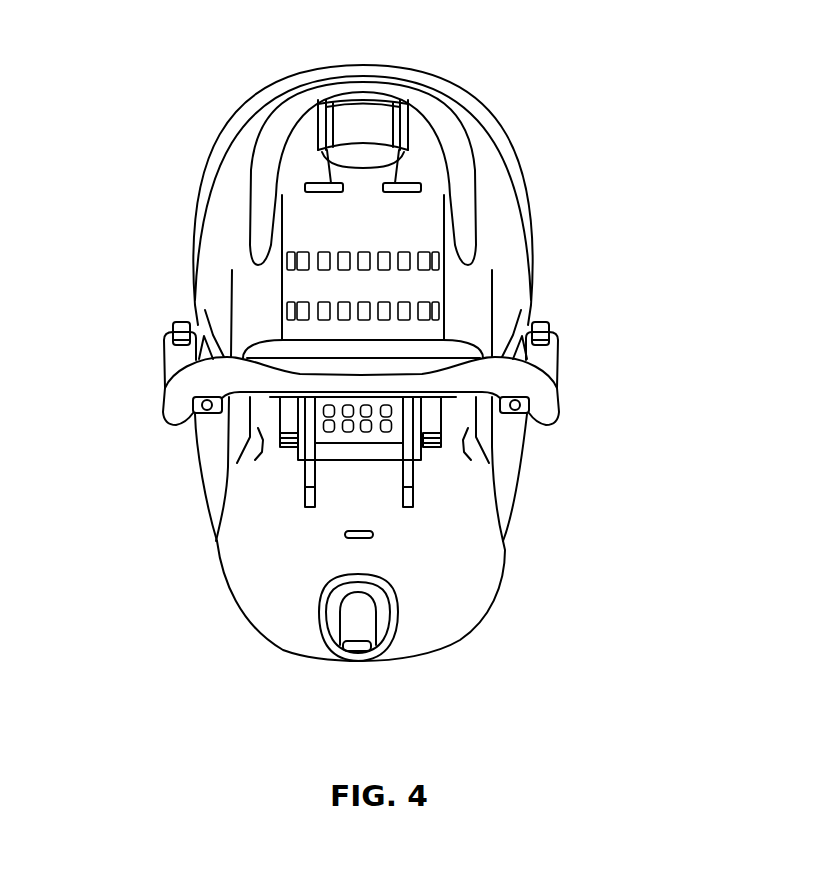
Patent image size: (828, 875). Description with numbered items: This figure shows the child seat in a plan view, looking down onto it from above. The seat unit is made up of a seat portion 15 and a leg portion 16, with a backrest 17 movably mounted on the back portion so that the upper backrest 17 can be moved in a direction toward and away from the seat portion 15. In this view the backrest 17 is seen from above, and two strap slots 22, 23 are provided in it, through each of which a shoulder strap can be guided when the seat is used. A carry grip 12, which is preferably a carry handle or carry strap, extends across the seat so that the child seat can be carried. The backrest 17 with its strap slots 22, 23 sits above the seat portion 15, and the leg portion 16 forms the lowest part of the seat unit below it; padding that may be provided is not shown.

The carry grip 12 is at (238, 376).
The seat portion 15 is at (512, 460).
The leg portion 16 is at (483, 592).
The backrest 17 is at (386, 240).
The strap slot 22 is at (314, 186).
The strap slot 23 is at (397, 184).